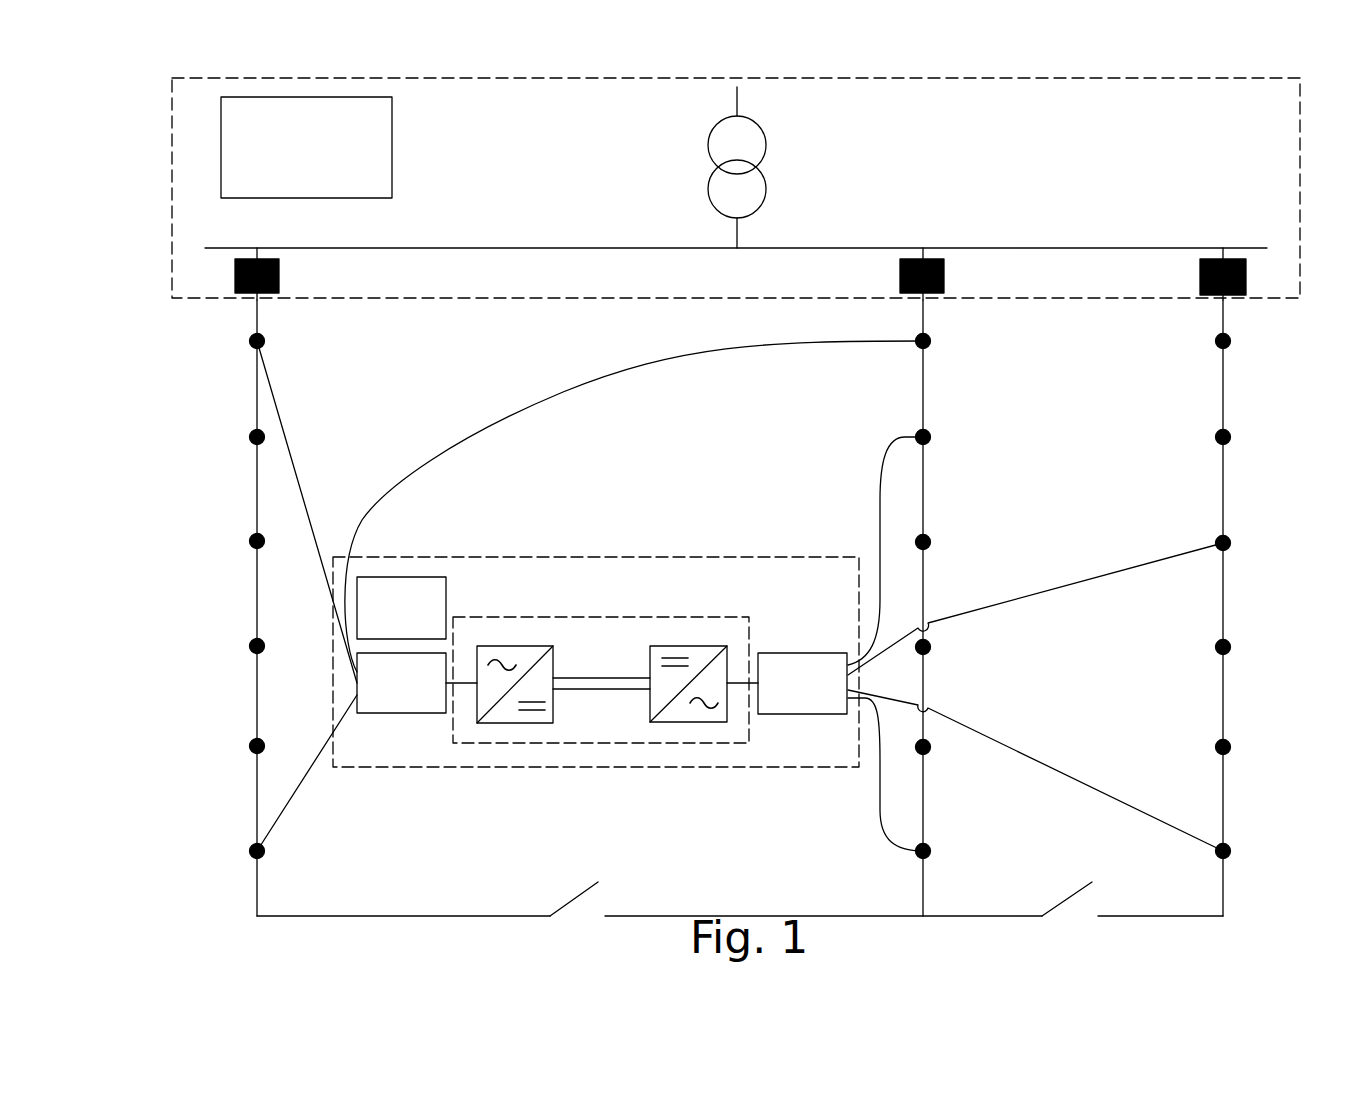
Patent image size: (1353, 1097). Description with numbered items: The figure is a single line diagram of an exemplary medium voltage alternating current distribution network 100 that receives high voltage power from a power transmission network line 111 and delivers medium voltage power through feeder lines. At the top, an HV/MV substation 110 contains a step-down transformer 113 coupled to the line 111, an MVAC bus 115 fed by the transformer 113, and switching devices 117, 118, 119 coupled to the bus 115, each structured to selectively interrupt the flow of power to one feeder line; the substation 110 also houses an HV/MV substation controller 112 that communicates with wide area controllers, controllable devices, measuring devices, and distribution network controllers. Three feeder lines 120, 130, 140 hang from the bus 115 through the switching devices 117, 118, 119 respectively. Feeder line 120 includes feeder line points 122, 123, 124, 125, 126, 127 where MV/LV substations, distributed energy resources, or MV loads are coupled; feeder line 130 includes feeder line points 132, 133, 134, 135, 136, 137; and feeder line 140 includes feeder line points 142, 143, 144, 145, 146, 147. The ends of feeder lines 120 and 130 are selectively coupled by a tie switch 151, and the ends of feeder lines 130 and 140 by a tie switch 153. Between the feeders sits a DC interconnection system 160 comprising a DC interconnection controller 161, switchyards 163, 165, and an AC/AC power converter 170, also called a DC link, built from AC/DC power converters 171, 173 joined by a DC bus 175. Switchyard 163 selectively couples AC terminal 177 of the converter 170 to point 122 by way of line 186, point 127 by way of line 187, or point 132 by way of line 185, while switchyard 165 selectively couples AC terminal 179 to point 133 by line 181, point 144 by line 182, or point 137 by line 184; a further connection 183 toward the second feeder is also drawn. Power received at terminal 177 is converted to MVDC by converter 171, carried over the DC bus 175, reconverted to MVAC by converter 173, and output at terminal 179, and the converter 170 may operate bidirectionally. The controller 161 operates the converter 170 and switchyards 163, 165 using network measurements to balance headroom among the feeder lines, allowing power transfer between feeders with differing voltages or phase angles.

The medium voltage alternating current distribution network 100 is at (182, 895).
The HV/MV substation 110 is at (745, 78).
The power transmission network line 111 is at (738, 96).
The HV/MV substation controller 112 is at (393, 140).
The step-down transformer 113 is at (766, 143).
The MVAC bus 115 is at (797, 247).
The switching device 117 is at (280, 268).
The switching device 118 is at (899, 268).
The switching device 119 is at (1199, 268).
The feeder line 120 is at (182, 365).
The feeder line point 122 is at (249, 341).
The feeder line point 123 is at (249, 437).
The feeder line point 124 is at (249, 541).
The feeder line point 125 is at (249, 646).
The feeder line point 126 is at (249, 746).
The feeder line point 127 is at (249, 851).
The feeder line 130 is at (886, 366).
The feeder line point 132 is at (931, 341).
The feeder line point 133 is at (931, 437).
The feeder line point 134 is at (931, 542).
The feeder line point 135 is at (931, 647).
The feeder line point 136 is at (931, 747).
The feeder line point 137 is at (931, 851).
The feeder line 140 is at (1182, 365).
The feeder line point 142 is at (1231, 341).
The feeder line point 143 is at (1231, 437).
The feeder line point 144 is at (1231, 543).
The feeder line point 145 is at (1231, 647).
The feeder line point 146 is at (1231, 747).
The feeder line point 147 is at (1231, 851).
The tie switch 151 is at (573, 897).
The tie switch 153 is at (1068, 896).
The DC interconnection system 160 is at (598, 556).
The DC interconnection controller 161 is at (386, 576).
The switchyard 163 is at (395, 714).
The switchyard 165 is at (777, 715).
The AC/AC power converter 170 is at (596, 617).
The AC/DC power converter 171 is at (506, 645).
The AC/DC power converter 173 is at (687, 645).
The DC bus 175 is at (594, 677).
The AC terminal 177 is at (462, 680).
The AC terminal 179 is at (740, 680).
The line 181 is at (879, 485).
The line 182 is at (890, 648).
The connection line 183 is at (906, 705).
The line 184 is at (879, 787).
The line 185 is at (482, 442).
The line 186 is at (303, 482).
The line 187 is at (303, 778).